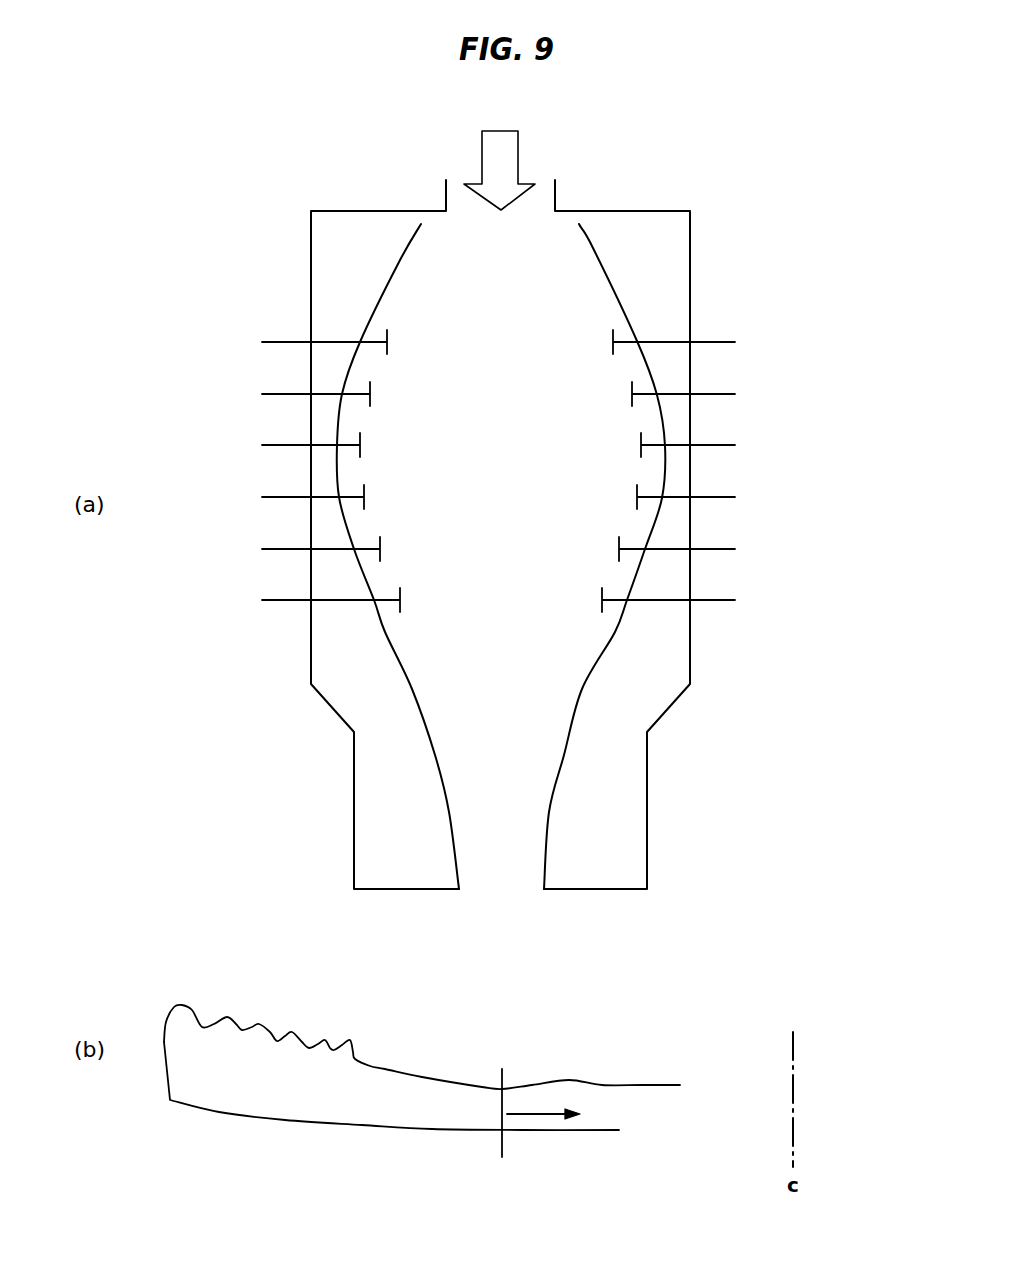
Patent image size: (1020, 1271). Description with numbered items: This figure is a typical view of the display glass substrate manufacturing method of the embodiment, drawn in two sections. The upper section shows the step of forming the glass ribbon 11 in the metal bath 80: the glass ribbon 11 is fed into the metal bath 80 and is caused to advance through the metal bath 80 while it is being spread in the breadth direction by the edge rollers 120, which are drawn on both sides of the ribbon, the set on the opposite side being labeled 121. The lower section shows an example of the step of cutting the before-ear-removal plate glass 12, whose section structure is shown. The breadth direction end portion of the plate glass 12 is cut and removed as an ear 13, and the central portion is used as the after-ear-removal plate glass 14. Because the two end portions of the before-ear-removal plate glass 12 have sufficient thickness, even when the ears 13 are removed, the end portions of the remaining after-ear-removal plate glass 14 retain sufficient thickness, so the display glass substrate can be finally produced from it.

The metal bath 80 is at (628, 209).
The glass ribbon 11 is at (575, 283).
The edge rollers 120 is at (385, 329).
The right probes 121 is at (708, 339).
The before-ear-removal plate glass 12 is at (468, 1052).
The ear 13 is at (405, 1090).
The after-ear-removal plate glass 14 is at (588, 1097).